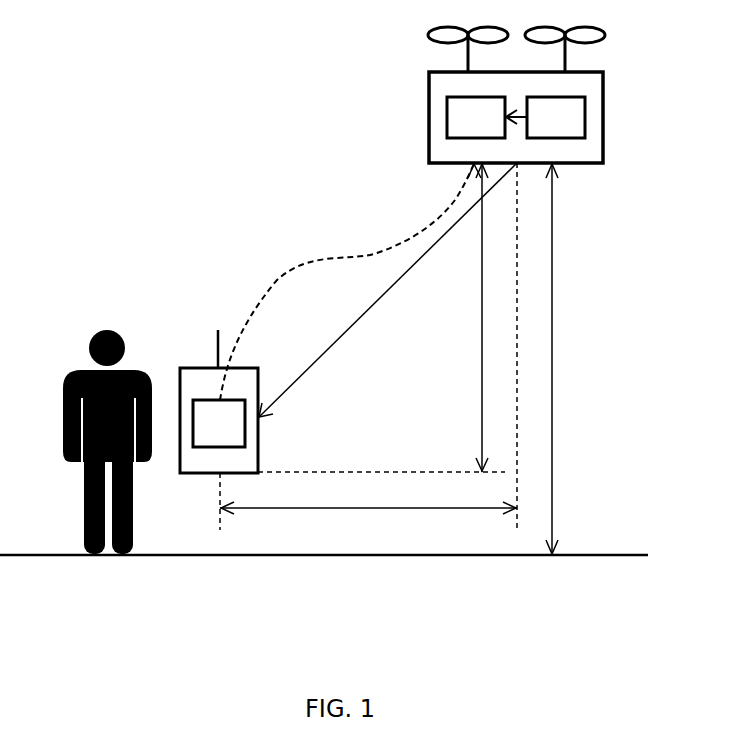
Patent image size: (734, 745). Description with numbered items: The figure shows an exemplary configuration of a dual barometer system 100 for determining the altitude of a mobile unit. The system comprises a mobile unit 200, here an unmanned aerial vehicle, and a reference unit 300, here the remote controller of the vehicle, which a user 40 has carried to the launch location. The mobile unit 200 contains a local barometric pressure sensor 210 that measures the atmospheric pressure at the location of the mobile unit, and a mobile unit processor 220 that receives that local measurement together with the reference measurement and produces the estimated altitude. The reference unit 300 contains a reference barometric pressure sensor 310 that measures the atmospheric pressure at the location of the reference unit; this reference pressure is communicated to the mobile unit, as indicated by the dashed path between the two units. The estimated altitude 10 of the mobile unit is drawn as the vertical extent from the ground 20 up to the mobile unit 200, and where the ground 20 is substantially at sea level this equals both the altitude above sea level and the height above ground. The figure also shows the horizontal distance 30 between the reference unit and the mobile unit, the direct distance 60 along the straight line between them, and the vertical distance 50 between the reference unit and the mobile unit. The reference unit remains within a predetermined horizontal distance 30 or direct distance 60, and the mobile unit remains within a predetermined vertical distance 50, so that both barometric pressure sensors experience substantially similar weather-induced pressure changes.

The dual barometer system 100 is at (228, 140).
The mobile unit 200 is at (448, 82).
The local barometric pressure sensor 210 is at (585, 118).
The mobile unit processor 220 is at (447, 113).
The reference unit 300 is at (200, 378).
The reference barometric pressure sensor 310 is at (249, 429).
The user 40 is at (88, 368).
The ground 20 is at (396, 557).
The altitude 10 is at (552, 348).
The vertical distance 50 is at (482, 368).
The horizontal distance 30 is at (368, 508).
The direct distance 60 is at (393, 287).